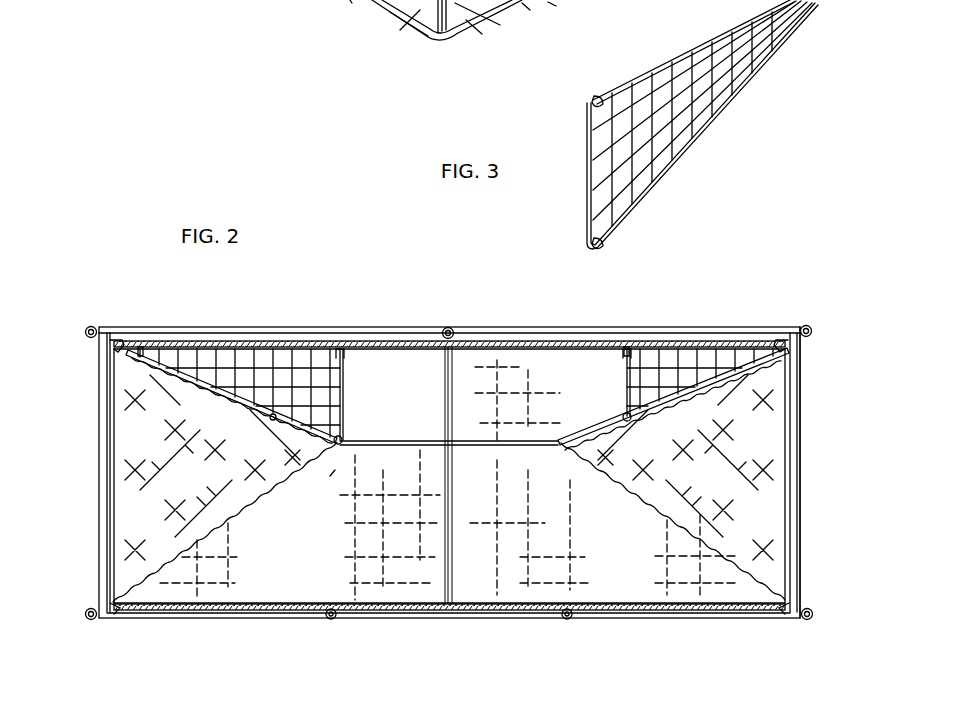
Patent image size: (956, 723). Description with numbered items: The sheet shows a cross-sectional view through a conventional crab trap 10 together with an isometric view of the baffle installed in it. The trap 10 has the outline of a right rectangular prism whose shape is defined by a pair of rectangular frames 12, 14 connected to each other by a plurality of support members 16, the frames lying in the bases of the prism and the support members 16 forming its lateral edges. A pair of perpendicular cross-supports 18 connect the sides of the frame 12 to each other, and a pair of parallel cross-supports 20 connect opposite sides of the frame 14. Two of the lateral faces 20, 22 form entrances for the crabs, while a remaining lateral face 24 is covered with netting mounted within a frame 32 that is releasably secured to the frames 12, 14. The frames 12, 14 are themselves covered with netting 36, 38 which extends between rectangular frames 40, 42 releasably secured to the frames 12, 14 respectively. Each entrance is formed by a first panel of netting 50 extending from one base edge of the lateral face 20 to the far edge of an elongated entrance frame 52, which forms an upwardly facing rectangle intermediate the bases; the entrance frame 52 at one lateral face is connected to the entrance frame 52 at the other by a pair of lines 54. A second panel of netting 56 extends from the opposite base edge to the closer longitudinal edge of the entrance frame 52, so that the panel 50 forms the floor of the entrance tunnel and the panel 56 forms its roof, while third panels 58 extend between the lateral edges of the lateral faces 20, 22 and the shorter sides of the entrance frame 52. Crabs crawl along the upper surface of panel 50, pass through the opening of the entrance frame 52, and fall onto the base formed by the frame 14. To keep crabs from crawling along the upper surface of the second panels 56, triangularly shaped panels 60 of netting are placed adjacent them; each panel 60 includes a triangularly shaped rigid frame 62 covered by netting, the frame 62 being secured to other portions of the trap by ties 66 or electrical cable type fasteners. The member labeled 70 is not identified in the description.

In FIG. 2, the crab trap 10 is at (763, 280).
In FIG. 2, the rectangular frame 12 is at (89, 326).
In FIG. 2, the rectangular frame 14 is at (90, 621).
In FIG. 3, the support member 16 is at (405, 22).
In FIG. 2, the support member 16 is at (104, 520).
In FIG. 2, the perpendicular cross-support 18 is at (450, 327).
In FIG. 3, the lateral face 20 is at (564, 7).
In FIG. 2, the lateral face 20 is at (90, 413).
In FIG. 2, the lateral face 22 is at (810, 413).
In FIG. 2, the lateral face 24 is at (386, 488).
In FIG. 2, the frame 32 is at (398, 342).
In FIG. 2, the netting 36 is at (498, 342).
In FIG. 3, the netting 38 is at (352, 0).
In FIG. 2, the rectangular frame 40 is at (116, 342).
In FIG. 2, the rectangular frame 42 is at (114, 612).
In FIG. 2, the first panel of netting 50 is at (236, 535).
In FIG. 2, the entrance frame 52 is at (447, 480).
In FIG. 2, the line 54 is at (478, 442).
In FIG. 2, the second panel of netting 56 is at (197, 386).
In FIG. 2, the third panel 58 is at (256, 497).
In FIG. 3, the triangularly shaped panel 60 is at (653, 50).
In FIG. 2, the triangularly shaped panel 60 is at (246, 350).
In FIG. 3, the triangularly shaped rigid frame 62 is at (728, 100).
In FIG. 3, the tie 66 is at (597, 99).
In FIG. 2, the tie 66 is at (141, 348).
In FIG. 3, the frame connector 70 is at (530, 3).